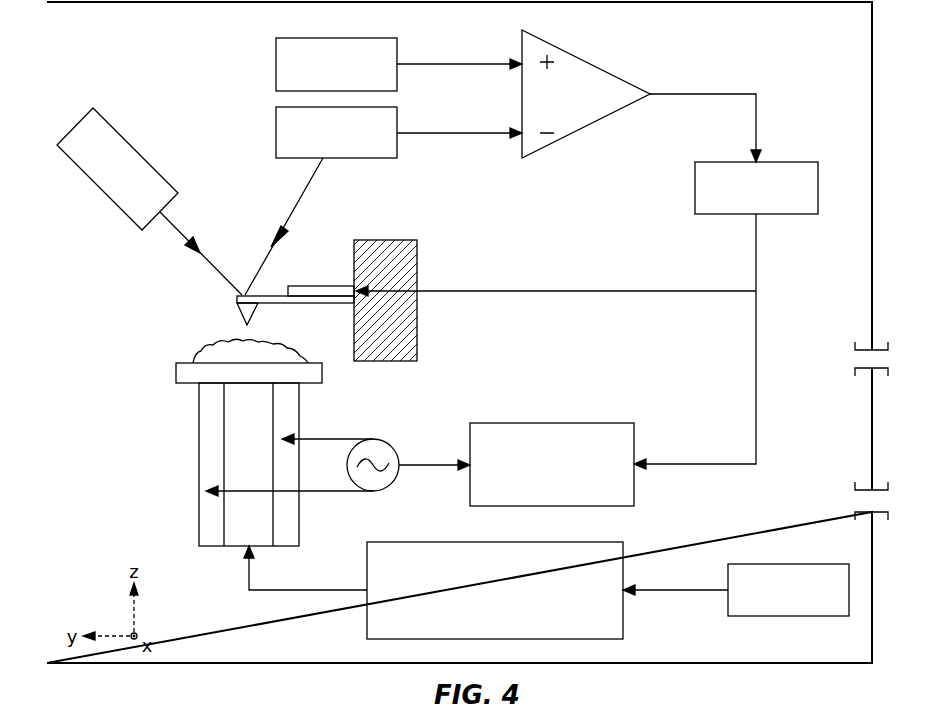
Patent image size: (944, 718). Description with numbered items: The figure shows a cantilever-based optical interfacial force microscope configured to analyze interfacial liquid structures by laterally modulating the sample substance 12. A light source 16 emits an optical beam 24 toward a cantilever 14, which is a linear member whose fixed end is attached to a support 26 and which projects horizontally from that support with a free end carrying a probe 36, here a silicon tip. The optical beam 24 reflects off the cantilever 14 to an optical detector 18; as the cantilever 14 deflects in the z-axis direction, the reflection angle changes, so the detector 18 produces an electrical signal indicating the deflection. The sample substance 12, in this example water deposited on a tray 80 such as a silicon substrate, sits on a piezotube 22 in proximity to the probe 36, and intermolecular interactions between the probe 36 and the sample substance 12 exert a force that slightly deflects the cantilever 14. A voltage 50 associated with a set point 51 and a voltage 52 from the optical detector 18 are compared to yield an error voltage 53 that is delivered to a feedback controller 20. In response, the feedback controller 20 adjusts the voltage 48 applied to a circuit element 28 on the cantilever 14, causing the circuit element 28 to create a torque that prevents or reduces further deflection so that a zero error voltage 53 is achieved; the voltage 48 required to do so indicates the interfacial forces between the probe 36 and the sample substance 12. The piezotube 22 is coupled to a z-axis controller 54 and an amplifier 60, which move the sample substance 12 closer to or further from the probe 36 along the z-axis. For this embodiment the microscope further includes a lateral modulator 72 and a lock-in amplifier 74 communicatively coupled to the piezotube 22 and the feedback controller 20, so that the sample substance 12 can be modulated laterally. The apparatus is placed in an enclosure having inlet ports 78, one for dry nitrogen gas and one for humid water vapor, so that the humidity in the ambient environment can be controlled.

The sample substance 12 is at (198, 355).
The cantilever 14 is at (278, 295).
The light source 16 is at (107, 181).
The optical detector 18 is at (325, 144).
The feedback controller 20 is at (745, 199).
The piezotube 22 is at (199, 502).
The optical beam 24 is at (183, 230).
The support 26 is at (407, 240).
The circuit element 28 is at (316, 286).
The probe 36 is at (243, 313).
The voltage 48 is at (562, 291).
The voltage 50 is at (438, 64).
The set point 51 is at (325, 75).
The voltage 52 is at (438, 133).
The zero error voltage 53 is at (700, 94).
The z-axis controller 54 is at (777, 601).
The amplifier 60 is at (484, 601).
The lateral modulator 72 is at (386, 442).
The lock-in amplifier 74 is at (541, 476).
The inlet port 78 is at (863, 345).
The tray 80 is at (176, 380).